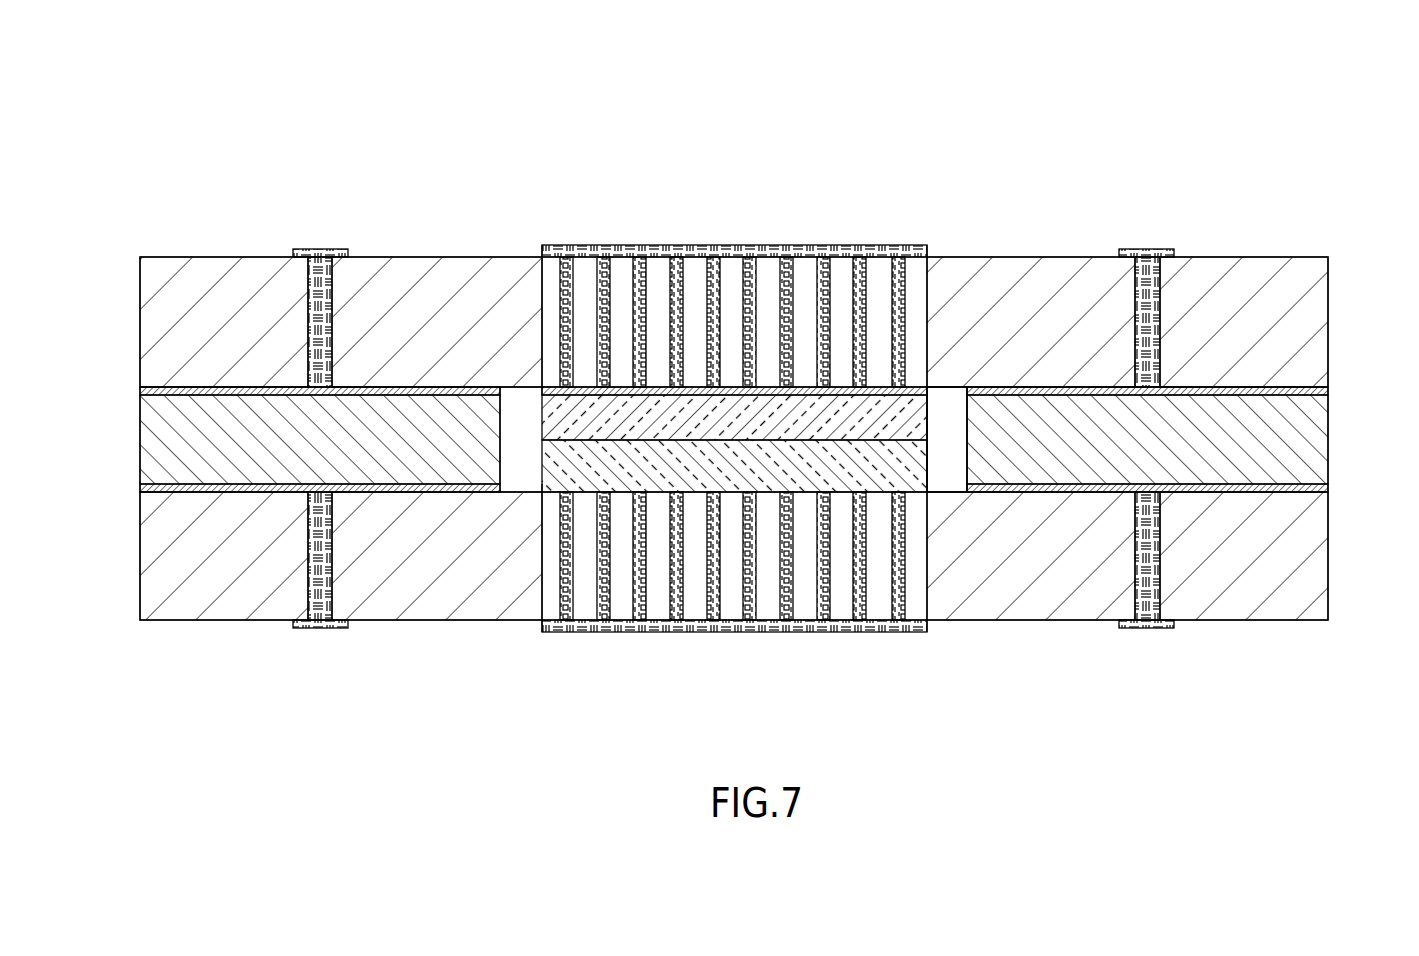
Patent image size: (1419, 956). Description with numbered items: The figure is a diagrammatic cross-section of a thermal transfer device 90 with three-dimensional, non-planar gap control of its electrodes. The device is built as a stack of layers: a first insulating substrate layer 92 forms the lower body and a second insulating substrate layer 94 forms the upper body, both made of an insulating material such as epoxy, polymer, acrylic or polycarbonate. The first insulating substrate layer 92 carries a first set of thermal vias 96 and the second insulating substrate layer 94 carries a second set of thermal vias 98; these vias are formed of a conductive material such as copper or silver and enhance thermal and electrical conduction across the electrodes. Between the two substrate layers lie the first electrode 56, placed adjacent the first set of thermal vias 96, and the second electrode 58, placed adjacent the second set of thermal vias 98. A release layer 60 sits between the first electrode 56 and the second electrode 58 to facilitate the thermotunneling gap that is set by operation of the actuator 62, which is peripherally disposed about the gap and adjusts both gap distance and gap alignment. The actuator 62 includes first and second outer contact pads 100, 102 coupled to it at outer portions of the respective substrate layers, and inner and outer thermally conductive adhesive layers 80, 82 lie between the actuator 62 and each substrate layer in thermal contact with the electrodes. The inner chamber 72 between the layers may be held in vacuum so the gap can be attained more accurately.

The thermal transfer device 90 is at (1313, 100).
The second insulating substrate layer 94 is at (420, 260).
The first insulating substrate layer 92 is at (208, 622).
The actuator 62 is at (150, 452).
The outer thermally conductive adhesive layer 82 is at (140, 390).
The second electrode 58 is at (546, 420).
The first electrode 56 is at (547, 468).
The inner thermally conductive adhesive layer 80 is at (927, 391).
The release layer 60 is at (927, 440).
The inner chamber 72 is at (960, 396).
The second set of thermal vias 98 is at (613, 272).
The first set of thermal vias 96 is at (622, 632).
The second outer contact pad 102 is at (322, 249).
The first outer contact pad 100 is at (325, 630).